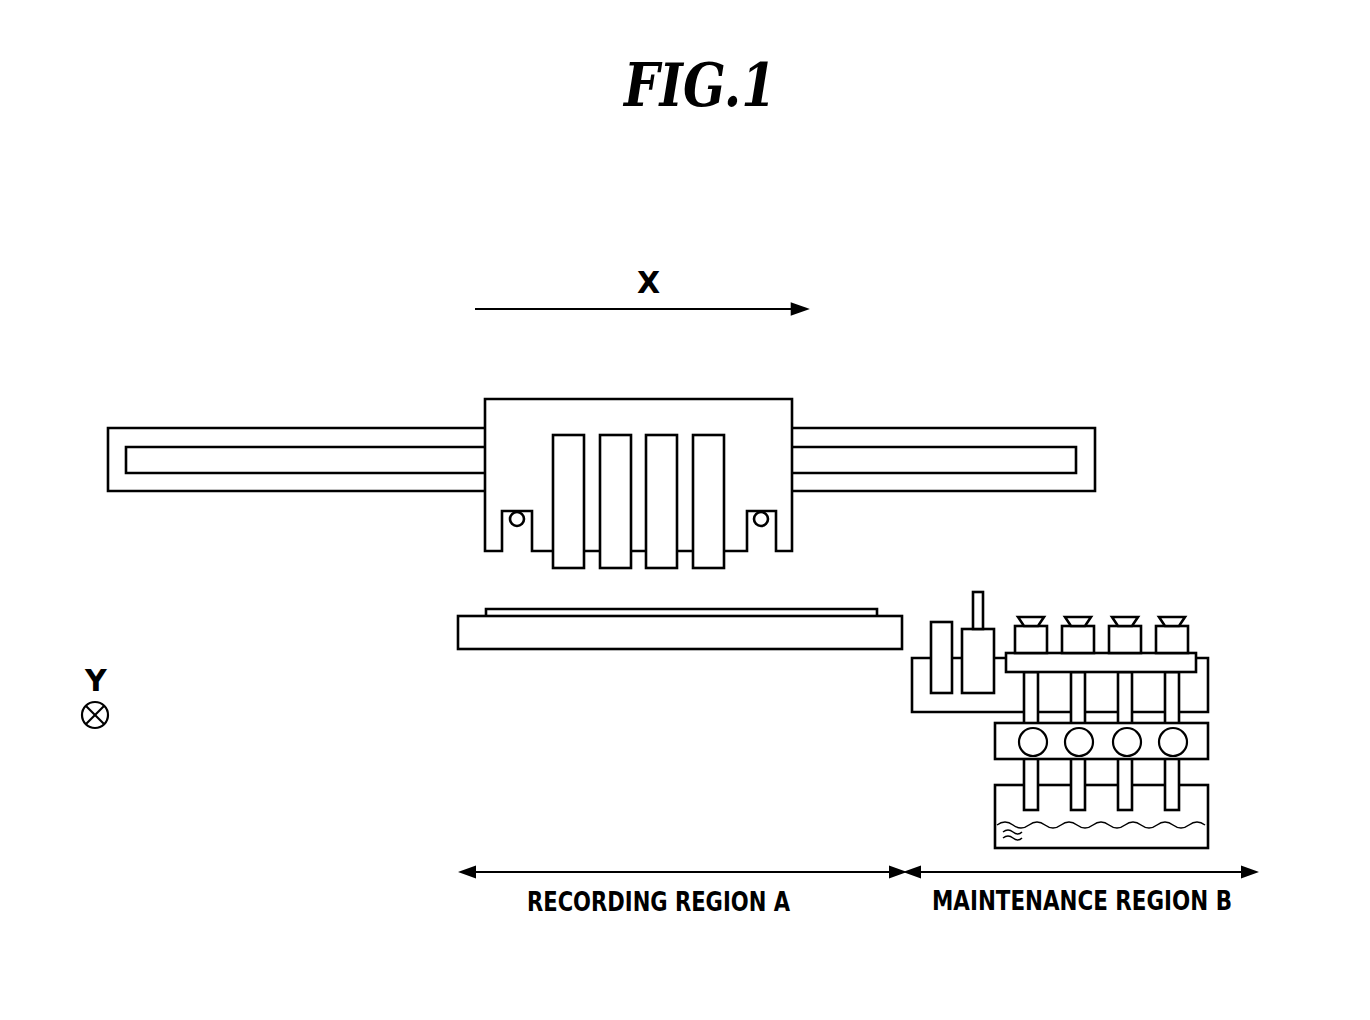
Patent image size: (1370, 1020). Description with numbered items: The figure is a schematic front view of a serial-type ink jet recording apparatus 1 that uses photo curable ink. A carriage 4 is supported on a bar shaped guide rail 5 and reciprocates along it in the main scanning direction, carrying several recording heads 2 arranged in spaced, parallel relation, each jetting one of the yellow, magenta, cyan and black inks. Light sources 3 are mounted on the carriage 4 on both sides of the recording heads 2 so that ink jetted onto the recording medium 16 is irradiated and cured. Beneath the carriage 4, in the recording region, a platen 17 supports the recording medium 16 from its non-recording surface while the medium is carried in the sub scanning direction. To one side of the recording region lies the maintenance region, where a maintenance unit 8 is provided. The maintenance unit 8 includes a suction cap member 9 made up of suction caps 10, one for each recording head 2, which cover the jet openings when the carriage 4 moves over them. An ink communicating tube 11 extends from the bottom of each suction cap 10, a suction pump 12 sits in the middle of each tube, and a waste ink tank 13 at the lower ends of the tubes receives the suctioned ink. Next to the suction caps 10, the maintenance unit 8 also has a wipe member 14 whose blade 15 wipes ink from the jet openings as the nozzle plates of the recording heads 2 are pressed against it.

The ink jet recording apparatus 1 is at (998, 266).
The recording head 2 is at (708, 440).
The light source 3 is at (502, 514).
The carriage 4 is at (505, 423).
The guide rail 5 is at (1034, 437).
The maintenance unit 8 is at (1278, 613).
The suction cap member 9 is at (1190, 571).
The suction cap 10 is at (1183, 639).
The ink communicating tube 11 is at (1175, 692).
The suction pump 12 is at (1018, 742).
The waste ink tank 13 is at (1200, 837).
The wipe member 14 is at (998, 571).
The blade 15 is at (970, 600).
The recording medium 16 is at (486, 608).
The platen 17 is at (645, 629).